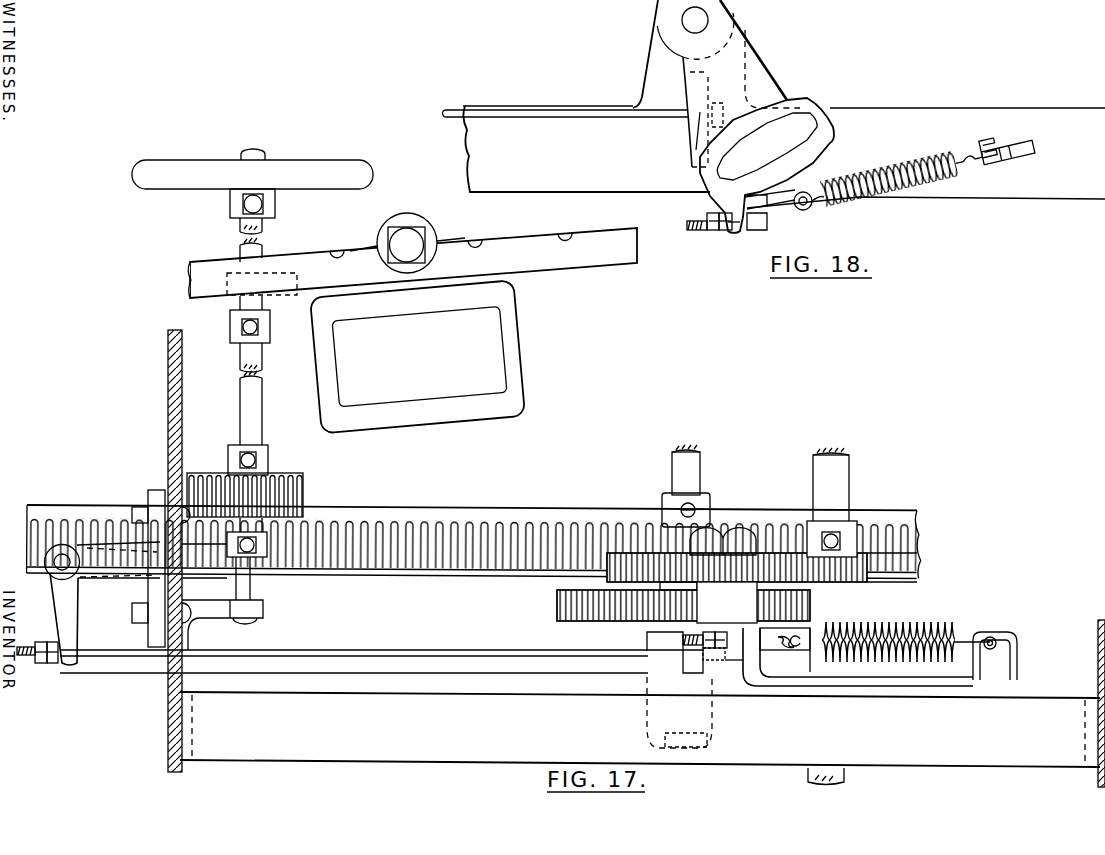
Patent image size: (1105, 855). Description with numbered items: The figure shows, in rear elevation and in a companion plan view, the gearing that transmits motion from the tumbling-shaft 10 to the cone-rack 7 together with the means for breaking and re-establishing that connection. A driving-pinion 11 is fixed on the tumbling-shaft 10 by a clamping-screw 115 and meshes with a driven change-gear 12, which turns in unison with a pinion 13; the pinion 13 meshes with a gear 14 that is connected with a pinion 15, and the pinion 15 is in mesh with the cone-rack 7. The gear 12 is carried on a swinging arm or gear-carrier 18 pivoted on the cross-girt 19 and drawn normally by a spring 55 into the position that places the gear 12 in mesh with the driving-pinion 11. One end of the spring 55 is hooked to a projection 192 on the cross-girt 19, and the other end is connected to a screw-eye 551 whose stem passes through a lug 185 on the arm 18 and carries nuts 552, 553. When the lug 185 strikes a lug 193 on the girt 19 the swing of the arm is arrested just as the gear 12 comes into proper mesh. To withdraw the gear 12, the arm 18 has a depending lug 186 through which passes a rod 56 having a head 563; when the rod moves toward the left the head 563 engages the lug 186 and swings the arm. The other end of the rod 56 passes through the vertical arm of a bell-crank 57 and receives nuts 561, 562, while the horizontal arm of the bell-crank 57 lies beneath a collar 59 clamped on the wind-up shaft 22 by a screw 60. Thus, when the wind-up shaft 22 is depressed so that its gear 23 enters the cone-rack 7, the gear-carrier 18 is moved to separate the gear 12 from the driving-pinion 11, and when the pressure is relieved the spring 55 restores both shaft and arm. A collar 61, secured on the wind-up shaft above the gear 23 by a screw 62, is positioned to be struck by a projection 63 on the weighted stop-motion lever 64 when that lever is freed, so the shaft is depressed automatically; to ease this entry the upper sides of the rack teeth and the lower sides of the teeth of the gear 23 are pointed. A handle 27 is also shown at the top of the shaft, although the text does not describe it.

In FIG. 17, the cone-rack 7 is at (528, 519).
In FIG. 17, the tumbling-shaft 10 is at (831, 485).
In FIG. 17, the driving-pinion 11 is at (848, 578).
In FIG. 17, the driven gear 12 is at (654, 560).
In FIG. 17, the pinion 13 is at (729, 606).
In FIG. 17, the gear 14 is at (616, 625).
In FIG. 17, the pinion 15 is at (692, 529).
In FIG. 17, the clamping-screw 115 is at (839, 533).
In FIG. 18, the arm or gear-carrier 18 is at (733, 116).
In FIG. 17, the arm or gear-carrier 18 is at (813, 629).
In FIG. 18, the cross-girt 19 is at (954, 204).
In FIG. 17, the cross-girt 19 is at (640, 738).
In FIG. 17, the wind-up shaft 22 is at (242, 406).
In FIG. 17, the gear 23 is at (313, 478).
In FIG. 17, the handle 27 is at (312, 167).
In FIG. 18, the spring 55 is at (882, 164).
In FIG. 17, the spring 55 is at (912, 634).
In FIG. 18, the rod 56 is at (546, 117).
In FIG. 17, the rod 56 is at (437, 653).
In FIG. 17, the bell-crank 57 is at (72, 619).
In FIG. 17, the collar 59 is at (261, 551).
In FIG. 17, the screw 60 is at (252, 556).
In FIG. 17, the collar 61 is at (232, 326).
In FIG. 17, the screw 62 is at (257, 335).
In FIG. 17, the projection 63 is at (272, 298).
In FIG. 17, the weighted stop-motion lever 64 is at (215, 267).
In FIG. 18, the lug 185 is at (741, 236).
In FIG. 17, the lug 185 is at (753, 646).
In FIG. 18, the depending lug 186 is at (697, 126).
In FIG. 17, the depending lug 186 is at (690, 662).
In FIG. 18, the projection 192 is at (1013, 156).
In FIG. 17, the projection 192 is at (1010, 670).
In FIG. 18, the lug 193 is at (767, 219).
In FIG. 17, the lug 193 is at (755, 650).
In FIG. 18, the screw-eye 551 is at (794, 212).
In FIG. 17, the screw-eye 551 is at (774, 654).
In FIG. 18, the nut 552 is at (715, 207).
In FIG. 17, the nut 552 is at (724, 652).
In FIG. 18, the nut 553 is at (711, 231).
In FIG. 17, the nut 553 is at (710, 655).
In FIG. 17, the nut 561 is at (58, 662).
In FIG. 17, the nut 562 is at (40, 663).
In FIG. 18, the head 563 is at (730, 118).
In FIG. 17, the head 563 is at (714, 654).